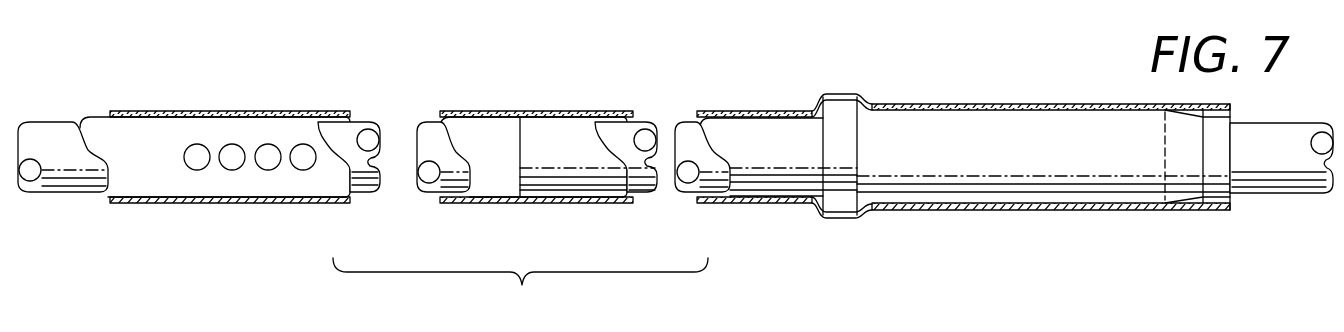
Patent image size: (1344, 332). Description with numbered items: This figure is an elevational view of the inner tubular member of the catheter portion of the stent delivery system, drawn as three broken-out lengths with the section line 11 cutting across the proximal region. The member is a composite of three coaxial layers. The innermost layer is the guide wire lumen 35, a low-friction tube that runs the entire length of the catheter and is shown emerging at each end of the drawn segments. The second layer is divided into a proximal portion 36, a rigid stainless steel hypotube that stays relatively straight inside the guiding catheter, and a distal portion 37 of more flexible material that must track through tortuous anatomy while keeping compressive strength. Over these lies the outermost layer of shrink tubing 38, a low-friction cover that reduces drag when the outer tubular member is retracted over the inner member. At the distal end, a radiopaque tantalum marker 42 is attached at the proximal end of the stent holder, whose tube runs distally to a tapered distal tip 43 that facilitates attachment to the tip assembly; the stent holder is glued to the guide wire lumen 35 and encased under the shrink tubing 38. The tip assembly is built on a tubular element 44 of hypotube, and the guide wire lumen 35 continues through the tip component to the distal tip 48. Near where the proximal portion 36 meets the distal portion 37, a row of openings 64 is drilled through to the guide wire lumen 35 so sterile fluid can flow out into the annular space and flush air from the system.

The section line 11- 11 is at (193, 60).
The guide wire lumen 35 is at (53, 140).
The proximal portion 36 is at (132, 182).
The distal portion 37 is at (768, 180).
The shrink tubing 38 is at (280, 110).
The tantalum marker 42 is at (845, 108).
The tapered distal tip 43 is at (1215, 212).
The tubular element 44 is at (203, 150).
The distal tip 48 is at (912, 104).
The openings 64 is at (270, 158).